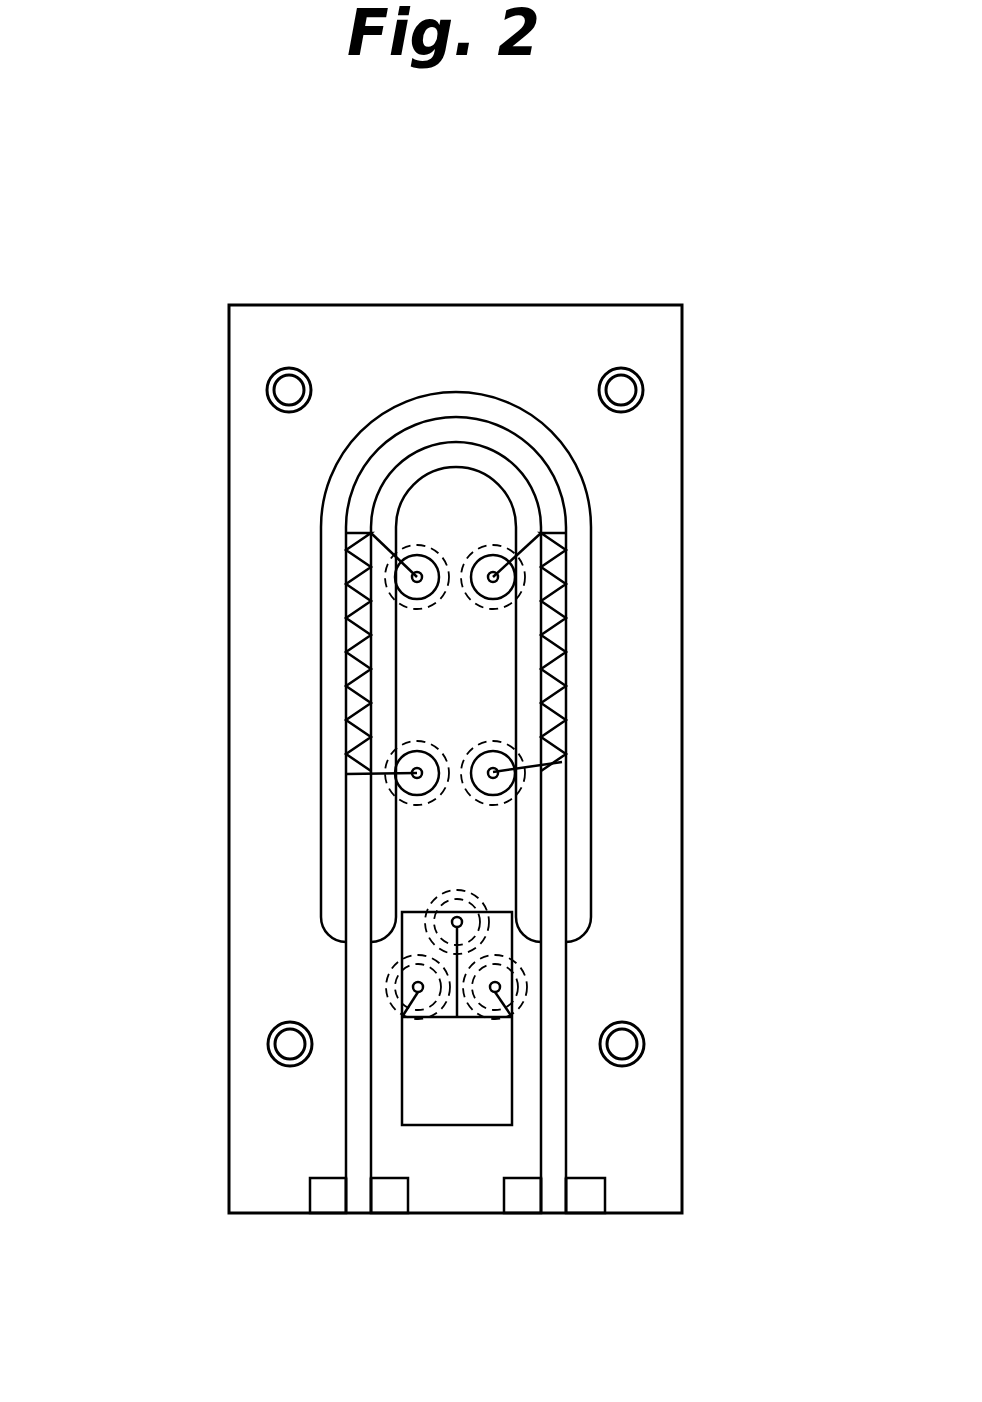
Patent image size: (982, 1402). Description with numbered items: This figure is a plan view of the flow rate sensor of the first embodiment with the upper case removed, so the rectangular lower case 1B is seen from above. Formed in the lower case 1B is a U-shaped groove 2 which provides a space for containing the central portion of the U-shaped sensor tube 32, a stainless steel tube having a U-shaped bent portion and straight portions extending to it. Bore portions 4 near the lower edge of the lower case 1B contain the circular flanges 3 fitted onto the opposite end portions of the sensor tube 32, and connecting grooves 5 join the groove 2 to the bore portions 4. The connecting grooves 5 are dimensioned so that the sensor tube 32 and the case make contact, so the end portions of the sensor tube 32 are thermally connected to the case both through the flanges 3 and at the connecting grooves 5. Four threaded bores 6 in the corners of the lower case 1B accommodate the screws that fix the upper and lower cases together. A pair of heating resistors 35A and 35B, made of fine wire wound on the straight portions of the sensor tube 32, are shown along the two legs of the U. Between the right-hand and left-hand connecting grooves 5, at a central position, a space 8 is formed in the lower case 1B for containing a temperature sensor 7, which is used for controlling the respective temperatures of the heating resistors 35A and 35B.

The lower case 1B is at (394, 320).
The U-shaped groove 2 is at (568, 497).
The sensor tube 32 is at (493, 440).
The heating resistor 35A is at (567, 632).
The heating resistor 35B is at (352, 580).
The circular flange 3 is at (327, 1203).
The bore portion 4 is at (310, 1197).
The connecting groove 5 is at (346, 1107).
The threaded bore 6 is at (289, 390).
The temperature sensor 7 is at (430, 1110).
The space 8 is at (484, 1128).